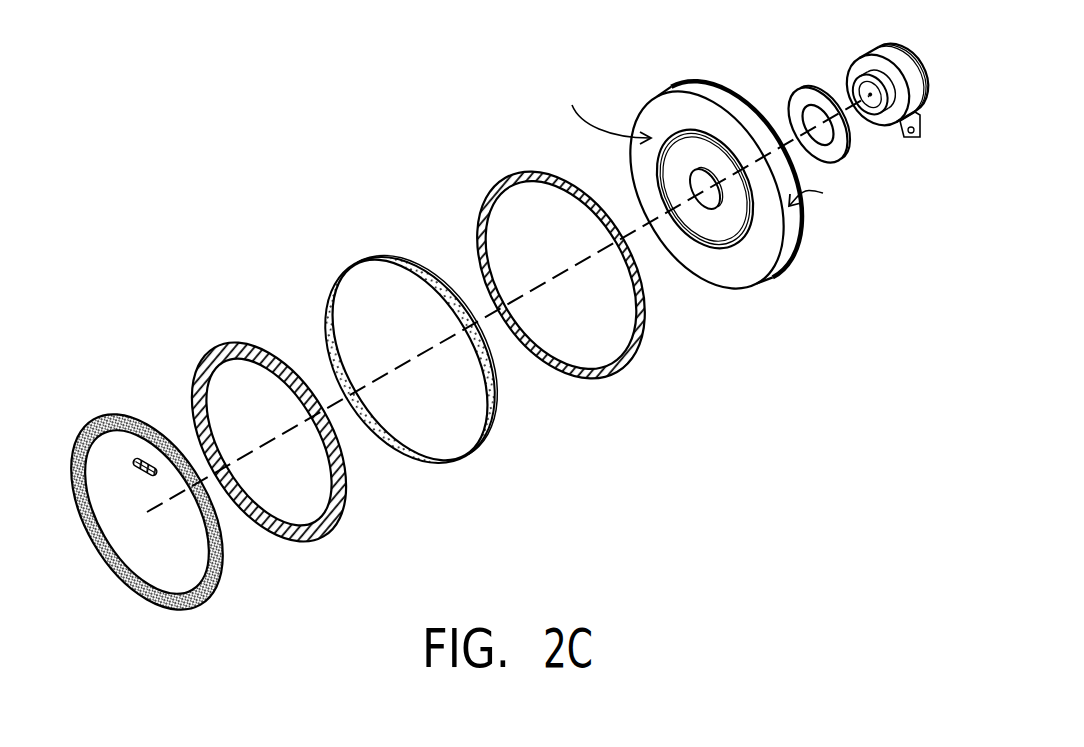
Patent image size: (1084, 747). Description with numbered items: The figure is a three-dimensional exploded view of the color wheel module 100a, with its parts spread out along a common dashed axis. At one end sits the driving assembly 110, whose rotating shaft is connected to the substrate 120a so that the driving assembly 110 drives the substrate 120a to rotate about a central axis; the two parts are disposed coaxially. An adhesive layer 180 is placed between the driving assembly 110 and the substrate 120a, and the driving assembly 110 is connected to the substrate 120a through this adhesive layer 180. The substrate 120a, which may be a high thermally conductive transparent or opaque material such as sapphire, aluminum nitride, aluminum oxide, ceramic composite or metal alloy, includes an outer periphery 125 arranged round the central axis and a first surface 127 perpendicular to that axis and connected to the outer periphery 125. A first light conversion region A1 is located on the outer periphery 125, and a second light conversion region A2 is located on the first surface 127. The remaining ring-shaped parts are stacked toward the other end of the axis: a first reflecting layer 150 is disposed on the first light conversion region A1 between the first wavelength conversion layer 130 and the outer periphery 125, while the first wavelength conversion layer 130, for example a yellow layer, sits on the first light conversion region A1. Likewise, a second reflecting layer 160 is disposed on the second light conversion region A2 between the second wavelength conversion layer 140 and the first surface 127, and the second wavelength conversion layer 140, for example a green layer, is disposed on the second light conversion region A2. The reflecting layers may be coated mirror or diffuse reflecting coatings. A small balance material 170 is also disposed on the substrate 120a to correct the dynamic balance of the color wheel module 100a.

The color wheel module 100a is at (845, 570).
The driving assembly 110 is at (892, 118).
The substrate 120a is at (717, 157).
The outer periphery 125 is at (745, 164).
The first surface 127 is at (658, 117).
The first wavelength conversion layer 130 is at (433, 457).
The second wavelength conversion layer 140 is at (167, 607).
The first reflecting layer 150 is at (571, 368).
The second reflecting layer 160 is at (310, 527).
The balance material 170 is at (141, 468).
The adhesive layer 180 is at (802, 97).
The first light conversion region A1 is at (820, 195).
The second light conversion region A2 is at (607, 108).